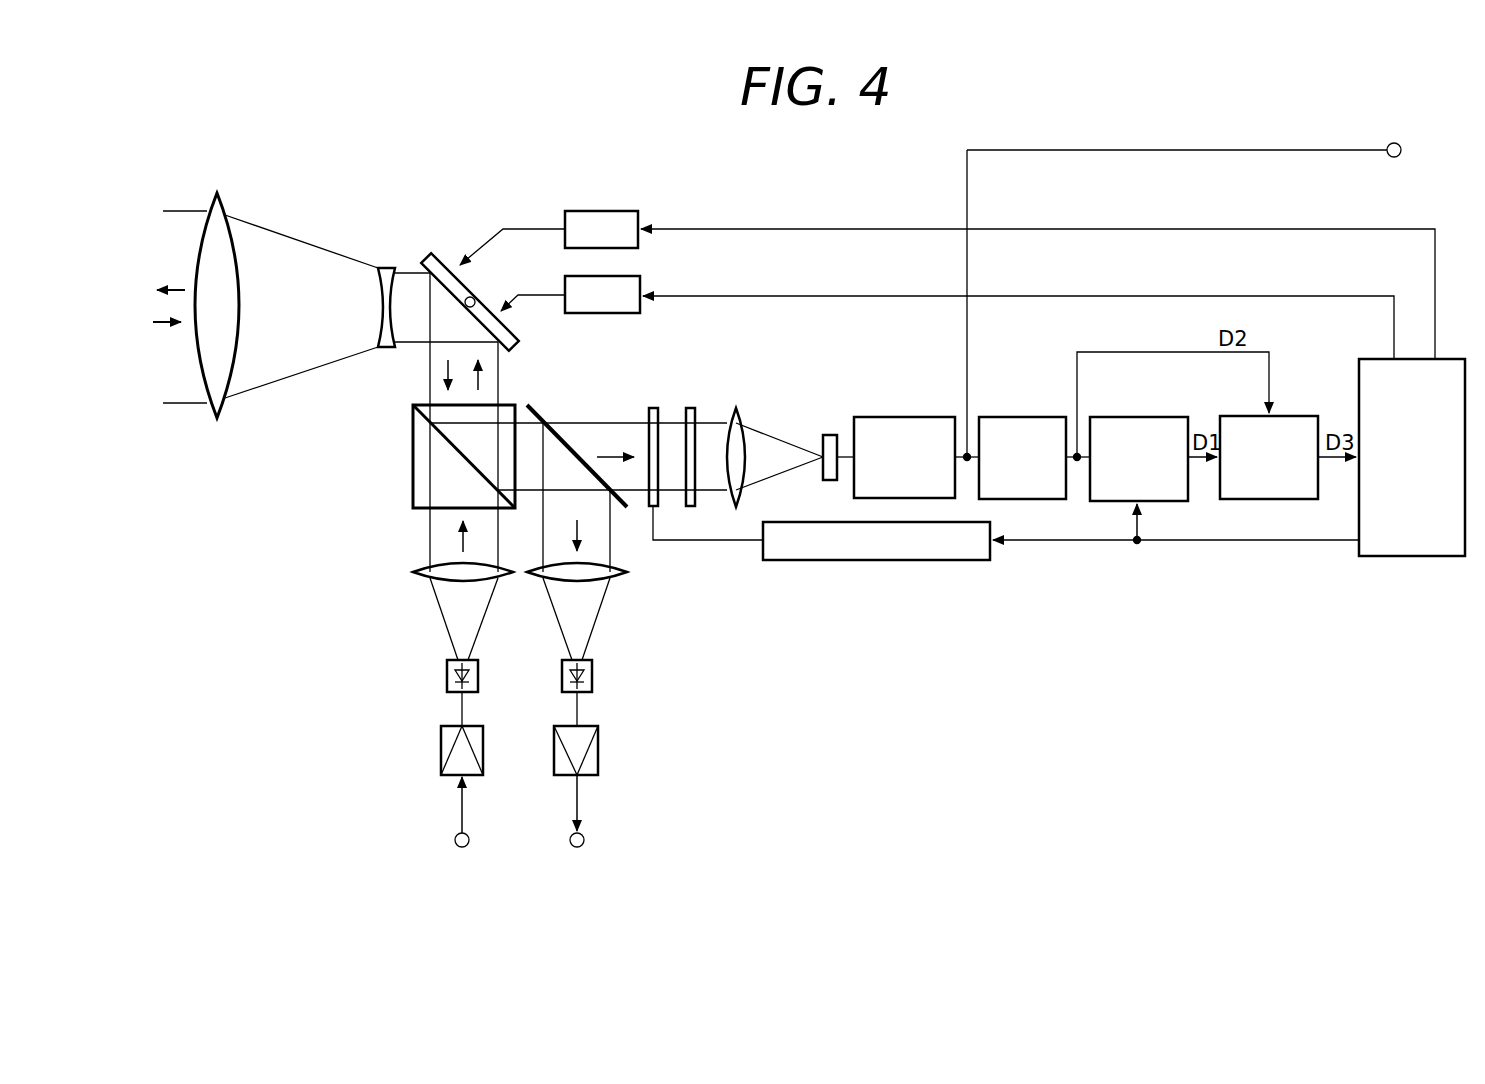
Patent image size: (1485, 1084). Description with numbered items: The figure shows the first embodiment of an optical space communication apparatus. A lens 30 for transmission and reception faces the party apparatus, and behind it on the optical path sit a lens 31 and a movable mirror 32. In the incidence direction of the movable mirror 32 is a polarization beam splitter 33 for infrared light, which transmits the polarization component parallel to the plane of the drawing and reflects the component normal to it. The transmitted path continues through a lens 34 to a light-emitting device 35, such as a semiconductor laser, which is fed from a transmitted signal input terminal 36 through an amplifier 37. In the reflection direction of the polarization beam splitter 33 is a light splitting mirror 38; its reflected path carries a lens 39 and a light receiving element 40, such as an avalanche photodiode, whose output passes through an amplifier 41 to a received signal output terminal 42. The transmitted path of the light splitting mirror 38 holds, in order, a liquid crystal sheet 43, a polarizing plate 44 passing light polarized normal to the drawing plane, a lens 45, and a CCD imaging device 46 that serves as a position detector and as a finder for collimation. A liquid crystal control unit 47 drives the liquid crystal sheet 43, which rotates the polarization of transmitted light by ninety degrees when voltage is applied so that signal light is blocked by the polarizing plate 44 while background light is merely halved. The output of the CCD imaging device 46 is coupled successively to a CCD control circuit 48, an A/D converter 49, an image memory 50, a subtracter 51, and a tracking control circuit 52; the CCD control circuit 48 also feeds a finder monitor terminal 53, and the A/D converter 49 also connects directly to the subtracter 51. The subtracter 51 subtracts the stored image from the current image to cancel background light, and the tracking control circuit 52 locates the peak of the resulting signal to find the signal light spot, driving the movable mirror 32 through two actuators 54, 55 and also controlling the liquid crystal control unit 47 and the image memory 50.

The lens 30 is at (240, 182).
The lens 31 is at (387, 264).
The movable mirror 32 is at (448, 264).
The polarization beam splitter 33 is at (413, 430).
The lens 34 is at (413, 570).
The light-emitting device 35 is at (447, 672).
The transmitted signal input terminal 36 is at (455, 838).
The amplifier 37 is at (441, 738).
The light splitting mirror 38 is at (540, 412).
The lens 39 is at (627, 572).
The light receiving element 40 is at (592, 671).
The amplifier 41 is at (598, 738).
The received signal output terminal 42 is at (584, 838).
The liquid crystal sheet 43 is at (653, 408).
The polarizing plate 44 is at (690, 408).
The lens 45 is at (737, 408).
The CCD imaging device 46 is at (831, 435).
The liquid crystal control unit 47 is at (812, 562).
The CCD control circuit 48 is at (930, 417).
The A/D converter 49 is at (1039, 417).
The image memory 50 is at (1166, 417).
The subtracter 51 is at (1294, 416).
The tracking control circuit 52 is at (1453, 359).
The finder monitor terminal 53 is at (1401, 150).
The actuator 54 is at (619, 211).
The actuator 55 is at (590, 313).